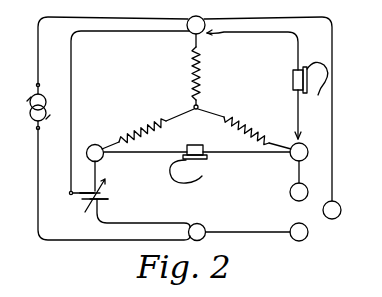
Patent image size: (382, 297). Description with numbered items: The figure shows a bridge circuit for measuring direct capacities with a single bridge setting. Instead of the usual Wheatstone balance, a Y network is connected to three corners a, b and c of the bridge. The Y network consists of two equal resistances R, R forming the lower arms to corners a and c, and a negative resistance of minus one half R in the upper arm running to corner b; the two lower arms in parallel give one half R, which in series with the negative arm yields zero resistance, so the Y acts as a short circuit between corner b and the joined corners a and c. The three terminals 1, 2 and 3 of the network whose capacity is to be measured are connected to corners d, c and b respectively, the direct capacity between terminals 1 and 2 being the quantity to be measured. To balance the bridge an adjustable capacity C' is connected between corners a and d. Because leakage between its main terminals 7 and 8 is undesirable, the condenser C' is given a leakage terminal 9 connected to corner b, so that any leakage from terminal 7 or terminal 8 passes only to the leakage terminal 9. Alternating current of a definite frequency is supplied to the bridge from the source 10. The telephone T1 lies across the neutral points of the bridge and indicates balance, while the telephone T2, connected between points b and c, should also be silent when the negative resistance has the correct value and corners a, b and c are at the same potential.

The terminal 1 is at (257, 232).
The terminal 2 is at (299, 181).
The terminal 3 is at (332, 210).
The main terminal 7 is at (87, 190).
The main terminal 8 is at (102, 200).
The leakage terminal 9 is at (69, 195).
The source 10 is at (31, 113).
The bridge corner a is at (95, 153).
The bridge corner b is at (196, 25).
The bridge corner c is at (299, 152).
The bridge corner d is at (197, 232).
The resistance R is at (251, 125).
The adjustable capacity C' is at (104, 195).
The telephone T1 is at (207, 159).
The telephone T2 is at (293, 81).